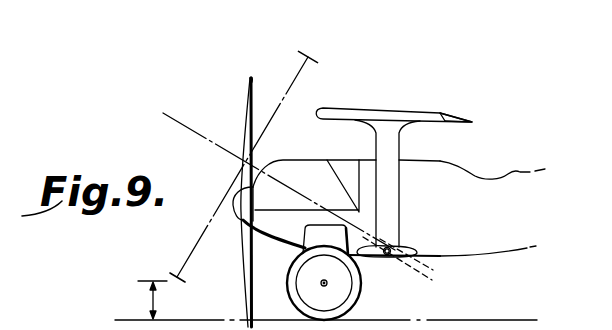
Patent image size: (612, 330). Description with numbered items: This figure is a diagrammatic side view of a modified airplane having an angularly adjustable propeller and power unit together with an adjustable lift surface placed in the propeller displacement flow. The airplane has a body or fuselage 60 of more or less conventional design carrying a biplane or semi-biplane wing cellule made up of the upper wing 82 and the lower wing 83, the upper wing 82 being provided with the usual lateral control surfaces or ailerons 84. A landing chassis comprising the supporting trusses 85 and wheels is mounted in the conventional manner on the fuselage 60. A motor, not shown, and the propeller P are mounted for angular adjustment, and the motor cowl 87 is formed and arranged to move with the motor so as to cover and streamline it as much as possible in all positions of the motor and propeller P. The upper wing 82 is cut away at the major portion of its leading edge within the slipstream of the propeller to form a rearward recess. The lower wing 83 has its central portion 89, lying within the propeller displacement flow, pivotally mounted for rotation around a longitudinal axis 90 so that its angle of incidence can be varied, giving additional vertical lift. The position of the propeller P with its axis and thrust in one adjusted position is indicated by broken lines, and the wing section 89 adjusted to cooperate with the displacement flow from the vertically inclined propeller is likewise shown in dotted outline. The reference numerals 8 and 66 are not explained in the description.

The propeller P is at (250, 102).
The wing 8 is at (355, 120).
The upper wing 82 is at (410, 114).
The ailerons 84 is at (460, 118).
The motor cowl 87 is at (297, 163).
The fuselage 60 is at (447, 175).
The longitudinal axis 90 is at (389, 247).
The lower wing 83 is at (370, 258).
The central portion of lower wing 89 is at (437, 271).
The supporting trusses 85 is at (311, 237).
The wheel 66 is at (355, 299).